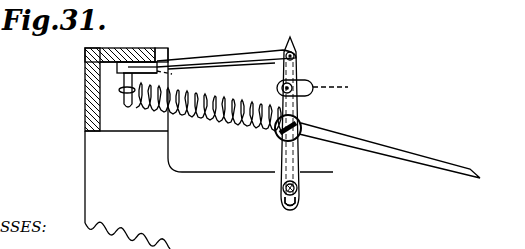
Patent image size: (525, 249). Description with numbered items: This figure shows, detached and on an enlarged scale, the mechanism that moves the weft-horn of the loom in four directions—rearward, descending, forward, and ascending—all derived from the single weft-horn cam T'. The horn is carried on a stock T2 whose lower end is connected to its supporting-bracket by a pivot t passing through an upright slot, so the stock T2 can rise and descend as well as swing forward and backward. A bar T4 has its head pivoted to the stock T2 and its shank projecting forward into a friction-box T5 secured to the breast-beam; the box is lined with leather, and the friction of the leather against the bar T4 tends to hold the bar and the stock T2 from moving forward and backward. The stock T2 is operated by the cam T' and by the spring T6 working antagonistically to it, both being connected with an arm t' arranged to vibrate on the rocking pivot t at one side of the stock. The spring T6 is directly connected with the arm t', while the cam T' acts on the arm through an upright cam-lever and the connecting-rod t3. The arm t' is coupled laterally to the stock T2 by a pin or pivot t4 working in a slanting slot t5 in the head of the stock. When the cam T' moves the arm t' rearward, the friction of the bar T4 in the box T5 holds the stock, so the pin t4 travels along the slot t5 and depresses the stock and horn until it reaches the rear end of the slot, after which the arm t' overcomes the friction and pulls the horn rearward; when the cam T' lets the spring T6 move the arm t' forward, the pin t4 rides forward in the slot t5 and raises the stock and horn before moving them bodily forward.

The bar T4 is at (226, 48).
The friction-box T5 is at (216, 76).
The spring T6 is at (210, 103).
The weft-horn cam T' is at (301, 123).
The pin or pivot t4 is at (285, 83).
The slanting slot t5 is at (344, 82).
The arm t' is at (303, 108).
The connecting-rod t3 is at (433, 161).
The stock T2 is at (313, 214).
The pivot t is at (289, 222).